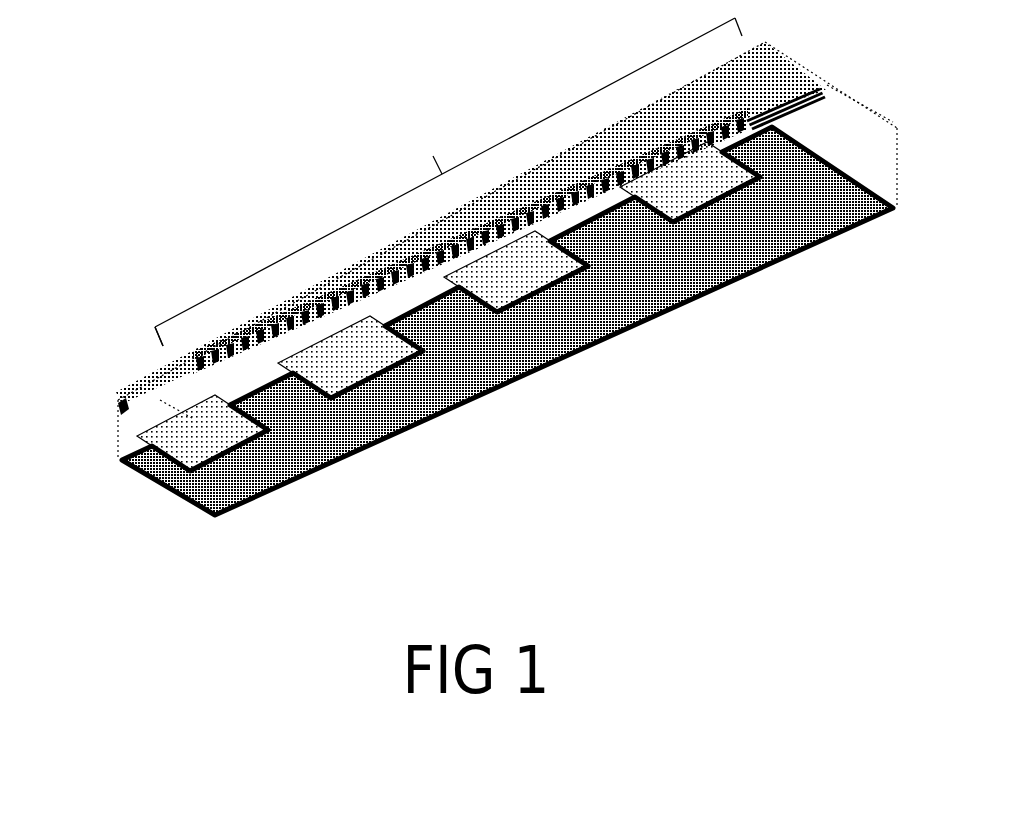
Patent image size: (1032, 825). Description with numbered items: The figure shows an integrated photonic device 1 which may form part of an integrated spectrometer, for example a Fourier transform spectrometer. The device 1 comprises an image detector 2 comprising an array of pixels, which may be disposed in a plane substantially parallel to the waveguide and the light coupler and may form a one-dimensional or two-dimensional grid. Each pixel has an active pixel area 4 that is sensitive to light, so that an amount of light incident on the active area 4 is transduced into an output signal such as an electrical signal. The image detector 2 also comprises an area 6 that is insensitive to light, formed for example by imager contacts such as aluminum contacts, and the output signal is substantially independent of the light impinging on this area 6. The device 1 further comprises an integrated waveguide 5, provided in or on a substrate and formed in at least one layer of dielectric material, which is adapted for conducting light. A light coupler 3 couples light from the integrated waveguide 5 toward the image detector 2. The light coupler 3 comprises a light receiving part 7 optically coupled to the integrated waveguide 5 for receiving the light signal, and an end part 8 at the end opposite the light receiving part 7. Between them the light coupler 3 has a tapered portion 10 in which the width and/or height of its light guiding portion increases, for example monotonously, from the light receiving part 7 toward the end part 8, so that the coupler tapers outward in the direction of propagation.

The integrated photonic device 1 is at (150, 91).
The image detector 2 is at (147, 544).
The light coupler 3 is at (290, 318).
The active pixel area 4 is at (245, 437).
The integrated waveguide 5 is at (155, 392).
The area insensitive to light 6 is at (283, 466).
The light receiving part 7 is at (178, 321).
The end part 8 is at (831, 120).
The tapered portion 10 is at (448, 182).